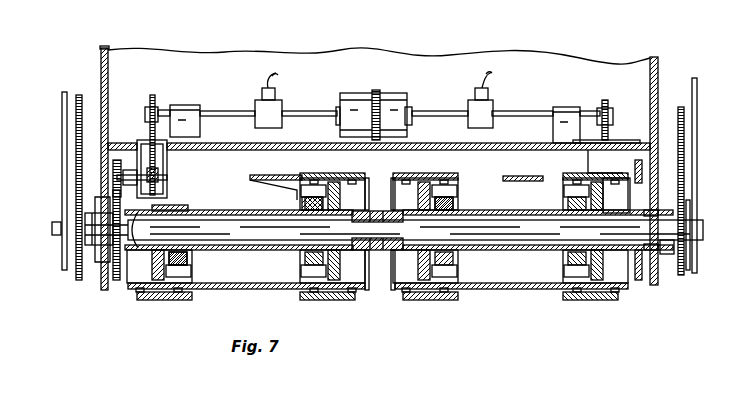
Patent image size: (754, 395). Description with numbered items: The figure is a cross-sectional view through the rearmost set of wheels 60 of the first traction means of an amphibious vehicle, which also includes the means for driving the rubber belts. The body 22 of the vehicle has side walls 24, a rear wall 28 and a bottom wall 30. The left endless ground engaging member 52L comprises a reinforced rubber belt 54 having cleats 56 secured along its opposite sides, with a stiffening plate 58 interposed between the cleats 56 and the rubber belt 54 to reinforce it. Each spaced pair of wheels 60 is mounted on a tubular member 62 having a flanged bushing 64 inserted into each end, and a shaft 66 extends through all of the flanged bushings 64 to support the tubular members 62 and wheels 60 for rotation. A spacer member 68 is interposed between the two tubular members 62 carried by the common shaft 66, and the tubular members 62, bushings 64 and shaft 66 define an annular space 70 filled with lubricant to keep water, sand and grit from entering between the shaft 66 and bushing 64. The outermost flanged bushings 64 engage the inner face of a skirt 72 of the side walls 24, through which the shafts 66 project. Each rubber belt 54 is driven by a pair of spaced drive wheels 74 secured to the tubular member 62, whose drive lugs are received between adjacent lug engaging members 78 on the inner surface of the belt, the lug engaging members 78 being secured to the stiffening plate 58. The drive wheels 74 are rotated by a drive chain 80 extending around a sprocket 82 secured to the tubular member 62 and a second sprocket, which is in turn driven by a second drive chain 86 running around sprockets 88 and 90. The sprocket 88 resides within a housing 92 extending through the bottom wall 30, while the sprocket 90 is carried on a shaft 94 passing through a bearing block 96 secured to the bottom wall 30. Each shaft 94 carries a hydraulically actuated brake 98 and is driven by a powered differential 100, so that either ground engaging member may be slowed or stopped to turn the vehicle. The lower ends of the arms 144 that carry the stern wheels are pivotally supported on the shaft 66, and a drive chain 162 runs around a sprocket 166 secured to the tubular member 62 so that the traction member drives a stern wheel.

The body 22 is at (603, 58).
The side walls 24 is at (100, 52).
The rear wall 28 is at (143, 52).
The bottom wall 30 is at (500, 146).
The endless ground engaging member 52L is at (183, 320).
The rubber belt 54 is at (503, 302).
The cleats 56 is at (165, 297).
The stiffening plate 58 is at (252, 177).
The wheels 60 is at (456, 172).
The tubular member 62 is at (246, 250).
The flanged bushing 64 is at (389, 213).
The shaft 66 is at (57, 225).
The spacer member 68 is at (376, 253).
The annular space 70 is at (216, 226).
The skirt 72 is at (103, 262).
The drive wheels 74 is at (190, 270).
The lug engaging members 78 is at (287, 177).
The drive chain 80 is at (117, 190).
The sprocket 82 is at (648, 283).
The second drive chain 86 is at (157, 163).
The sprocket 88 is at (157, 183).
The sprocket 90 is at (150, 102).
The housing 92 is at (143, 160).
The shaft 94 is at (168, 105).
The bearing block 96 is at (185, 105).
The hydraulically actuated brake 98 is at (283, 105).
The powered differential 100 is at (385, 90).
The arms 144 is at (63, 110).
The drive chain 162 is at (77, 152).
The sprocket 166 is at (66, 256).